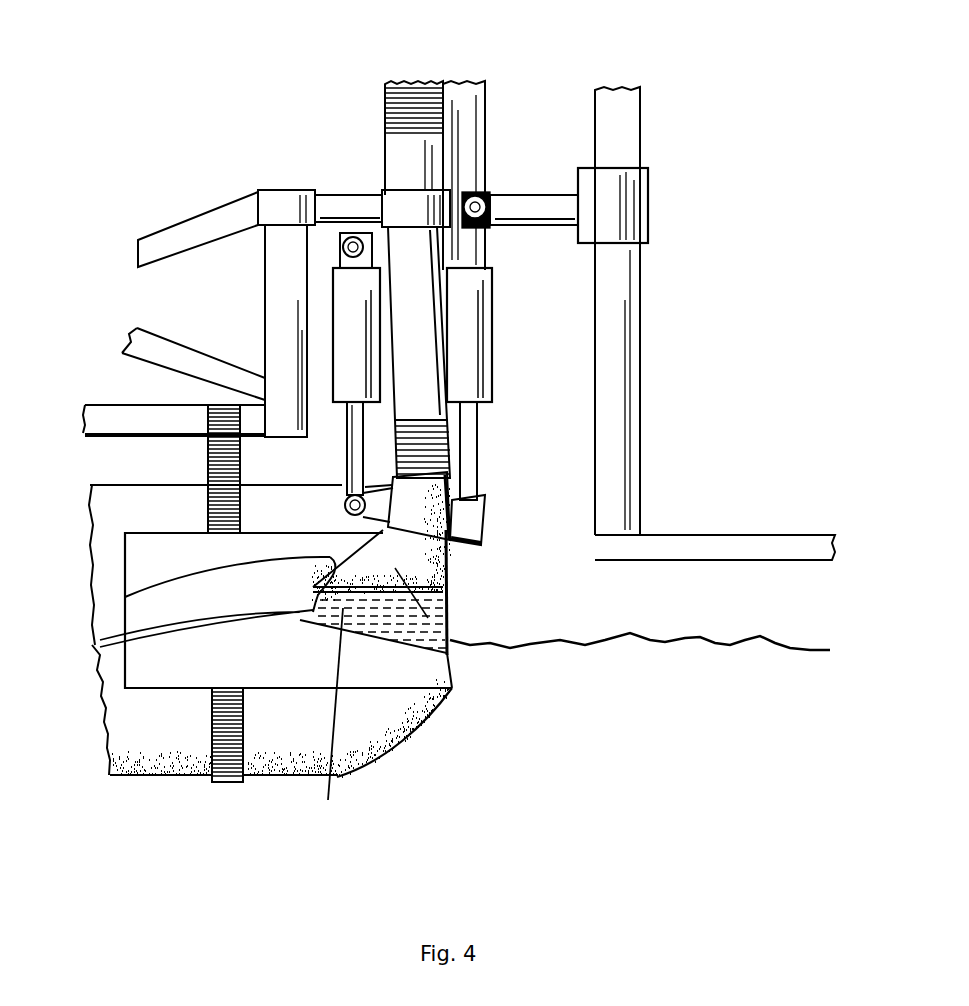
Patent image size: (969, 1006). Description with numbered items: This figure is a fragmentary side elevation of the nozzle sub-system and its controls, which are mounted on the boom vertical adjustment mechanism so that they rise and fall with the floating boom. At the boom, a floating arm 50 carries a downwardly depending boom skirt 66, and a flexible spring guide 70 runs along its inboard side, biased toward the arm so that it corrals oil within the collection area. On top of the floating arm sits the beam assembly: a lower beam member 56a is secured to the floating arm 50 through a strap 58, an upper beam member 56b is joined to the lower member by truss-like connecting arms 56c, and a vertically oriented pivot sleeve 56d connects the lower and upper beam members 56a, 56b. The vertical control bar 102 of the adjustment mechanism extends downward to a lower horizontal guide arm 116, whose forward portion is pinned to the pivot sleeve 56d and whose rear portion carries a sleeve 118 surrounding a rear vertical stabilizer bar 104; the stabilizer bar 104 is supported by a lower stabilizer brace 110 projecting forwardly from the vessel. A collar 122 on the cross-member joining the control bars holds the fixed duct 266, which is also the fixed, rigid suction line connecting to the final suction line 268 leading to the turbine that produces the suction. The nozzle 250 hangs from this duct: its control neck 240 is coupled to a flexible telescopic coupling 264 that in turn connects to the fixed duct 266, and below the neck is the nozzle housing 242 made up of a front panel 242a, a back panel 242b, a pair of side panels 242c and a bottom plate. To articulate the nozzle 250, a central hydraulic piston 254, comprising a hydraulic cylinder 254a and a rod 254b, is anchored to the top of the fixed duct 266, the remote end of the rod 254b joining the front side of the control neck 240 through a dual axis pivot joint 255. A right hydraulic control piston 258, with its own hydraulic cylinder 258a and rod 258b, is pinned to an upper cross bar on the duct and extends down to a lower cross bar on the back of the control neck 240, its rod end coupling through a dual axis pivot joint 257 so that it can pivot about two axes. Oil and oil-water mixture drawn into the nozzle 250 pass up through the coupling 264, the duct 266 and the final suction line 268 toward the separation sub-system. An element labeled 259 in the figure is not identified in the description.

The final suction line 268 is at (420, 97).
The vertical control bar 102 is at (473, 107).
The rear vertical stabilizer bar 104 is at (617, 108).
The fixed duct 266 is at (428, 257).
The lower horizontal guide arm 116 is at (553, 205).
The sleeve 118 is at (627, 202).
The collar 122 is at (400, 200).
The upper beam member 56b is at (233, 207).
The central hydraulic piston 254 is at (330, 279).
The pivot sleeve 56d is at (285, 310).
The right hydraulic control piston 258 is at (497, 277).
The hydraulic cylinder 254a is at (360, 322).
The hydraulic cylinder 258a is at (468, 330).
The truss-like connecting arms 56c is at (155, 350).
The rod 254b is at (355, 425).
The rod 258b is at (467, 438).
The lower beam member 56a is at (136, 428).
The strap 58 is at (208, 461).
The flexible telescopic coupling 264 is at (453, 470).
The dual axis pivot joint 255 is at (345, 507).
The floating arm 50 is at (130, 503).
The dual axis pivot joint 257 is at (485, 518).
The flexible spring guide 70 is at (148, 552).
The control neck 240 is at (450, 540).
The fluid spray 242 is at (452, 585).
The nozzle 250 is at (566, 578).
The fluid layer 242a is at (135, 587).
The lower stabilizer brace 110 is at (770, 542).
The back panel 242b is at (448, 607).
The side panels 242c is at (453, 660).
The boom skirt 66 is at (142, 733).
The tube 259 is at (318, 719).